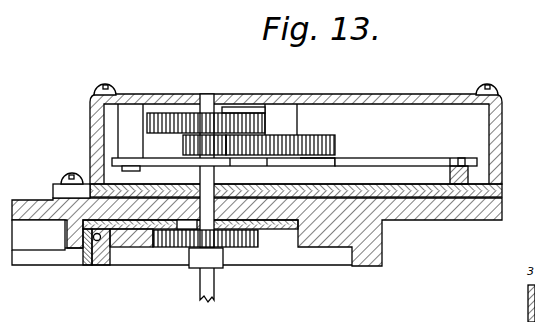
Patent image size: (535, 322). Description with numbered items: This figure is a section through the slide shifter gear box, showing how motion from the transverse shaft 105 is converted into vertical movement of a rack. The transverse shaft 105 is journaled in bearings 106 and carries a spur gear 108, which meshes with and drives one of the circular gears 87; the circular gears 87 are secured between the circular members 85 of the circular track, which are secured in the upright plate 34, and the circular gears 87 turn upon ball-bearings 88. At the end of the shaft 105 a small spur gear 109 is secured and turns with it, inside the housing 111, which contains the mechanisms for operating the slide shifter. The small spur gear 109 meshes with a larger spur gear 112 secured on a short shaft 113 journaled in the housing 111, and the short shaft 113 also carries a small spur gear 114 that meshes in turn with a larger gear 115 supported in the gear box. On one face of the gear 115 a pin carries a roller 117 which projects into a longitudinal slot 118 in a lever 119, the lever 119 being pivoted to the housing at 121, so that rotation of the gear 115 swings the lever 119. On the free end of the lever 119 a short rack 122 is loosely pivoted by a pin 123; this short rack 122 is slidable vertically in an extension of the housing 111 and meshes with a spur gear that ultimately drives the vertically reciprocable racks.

The upright plate 34 is at (25, 208).
The circular member 85 is at (108, 264).
The circular gear 87 is at (134, 240).
The ball-bearing 88 is at (86, 258).
The transverse shaft 105 is at (212, 286).
The bearing 106 is at (199, 258).
The spur gear 108 is at (245, 248).
The small spur gear 109 is at (223, 112).
The housing 111 is at (498, 155).
The larger spur gear 112 is at (251, 108).
The short shaft 113 is at (206, 98).
The small spur gear 114 is at (183, 145).
The larger gear 115 is at (319, 136).
The roller 117 is at (279, 166).
The longitudinal slot 118 is at (317, 158).
The lever 119 is at (389, 164).
The pivot 121 is at (135, 169).
The short rack 122 is at (450, 176).
The pin 123 is at (461, 160).